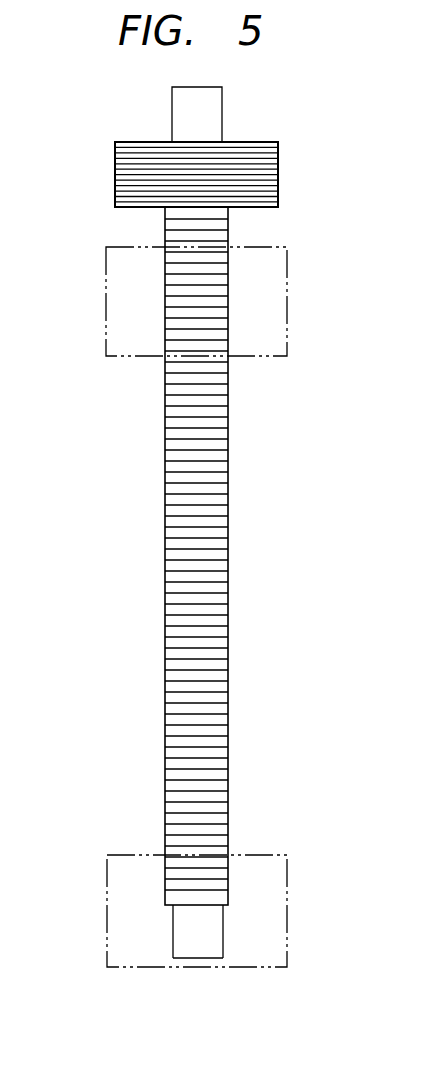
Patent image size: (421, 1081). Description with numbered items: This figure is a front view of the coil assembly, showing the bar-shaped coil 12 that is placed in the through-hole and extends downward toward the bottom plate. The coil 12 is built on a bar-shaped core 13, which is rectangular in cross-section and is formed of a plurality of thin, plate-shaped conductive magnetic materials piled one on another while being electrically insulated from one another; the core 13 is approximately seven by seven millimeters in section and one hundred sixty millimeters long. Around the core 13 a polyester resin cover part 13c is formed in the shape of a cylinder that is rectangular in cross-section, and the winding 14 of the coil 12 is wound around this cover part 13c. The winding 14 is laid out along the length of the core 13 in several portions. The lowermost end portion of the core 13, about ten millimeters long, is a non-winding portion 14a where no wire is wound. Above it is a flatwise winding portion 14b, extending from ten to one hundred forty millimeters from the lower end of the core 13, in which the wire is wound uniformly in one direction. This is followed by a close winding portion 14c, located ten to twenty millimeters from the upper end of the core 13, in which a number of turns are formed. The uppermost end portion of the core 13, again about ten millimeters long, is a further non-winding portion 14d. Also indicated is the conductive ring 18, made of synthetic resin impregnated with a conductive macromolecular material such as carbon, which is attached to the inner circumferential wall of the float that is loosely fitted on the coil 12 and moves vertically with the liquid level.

The bar-shaped coil 12 is at (165, 450).
The bar-shaped core 13 is at (172, 927).
The polyester resin cover part 13c is at (201, 957).
The winding 14 is at (229, 447).
The non-winding portion 14a is at (214, 929).
The flatwise winding portion 14b is at (224, 506).
The close winding portion 14c is at (279, 165).
The non-winding portion 14d is at (216, 113).
The conductive ring 18 is at (106, 279).